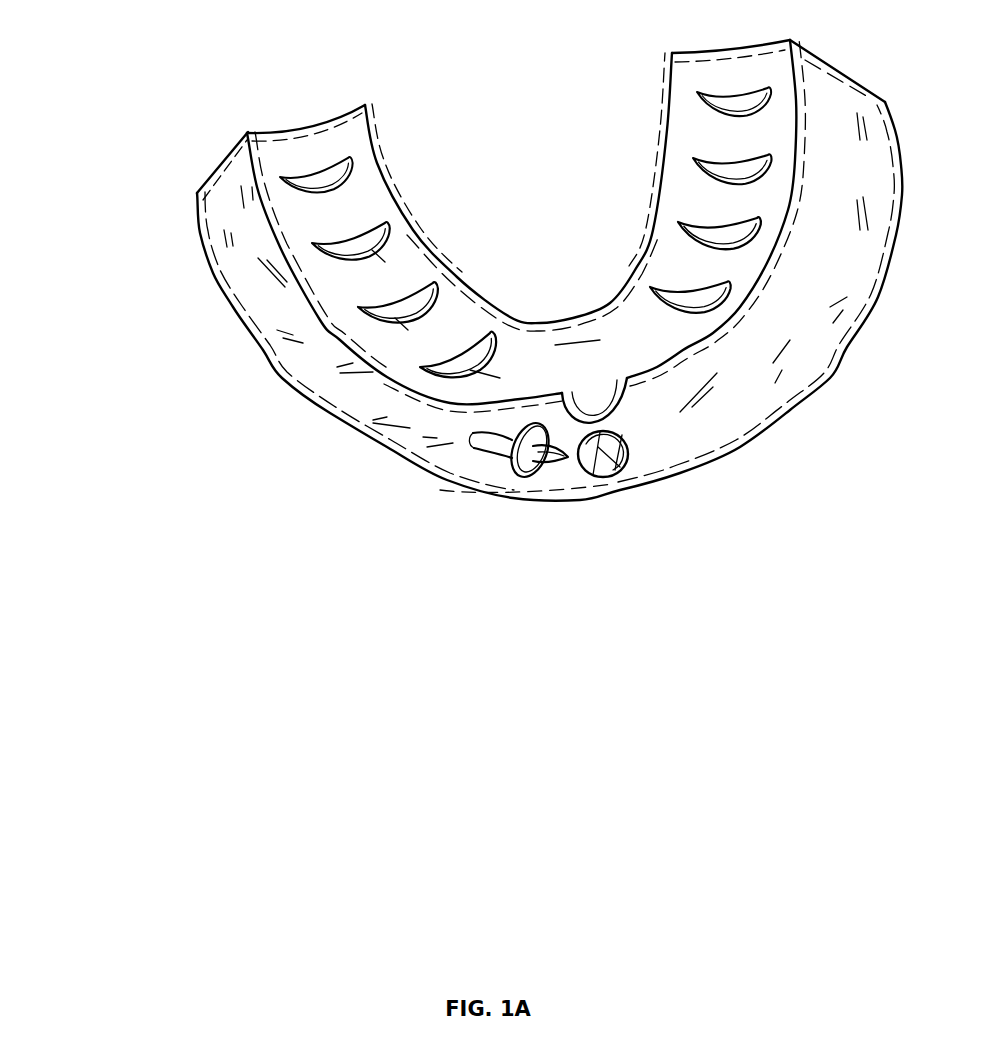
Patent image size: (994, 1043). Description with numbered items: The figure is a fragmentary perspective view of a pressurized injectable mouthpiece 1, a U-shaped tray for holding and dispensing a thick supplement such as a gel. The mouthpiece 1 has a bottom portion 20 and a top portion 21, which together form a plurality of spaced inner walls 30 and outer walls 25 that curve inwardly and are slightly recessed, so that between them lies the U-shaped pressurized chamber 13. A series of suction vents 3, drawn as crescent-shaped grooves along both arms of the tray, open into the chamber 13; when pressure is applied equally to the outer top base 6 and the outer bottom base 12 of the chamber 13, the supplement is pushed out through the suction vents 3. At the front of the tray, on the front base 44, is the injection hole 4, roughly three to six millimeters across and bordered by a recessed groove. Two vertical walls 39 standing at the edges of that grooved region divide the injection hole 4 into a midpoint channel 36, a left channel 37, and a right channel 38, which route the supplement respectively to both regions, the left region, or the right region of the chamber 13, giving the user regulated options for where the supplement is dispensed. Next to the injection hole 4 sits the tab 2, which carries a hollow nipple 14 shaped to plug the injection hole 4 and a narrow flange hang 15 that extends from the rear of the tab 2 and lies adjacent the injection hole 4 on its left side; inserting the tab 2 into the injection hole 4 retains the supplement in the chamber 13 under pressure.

The pressurized injectable mouthpiece 1 is at (522, 183).
The tab 2 is at (512, 473).
The suction vents 3 is at (325, 170).
The injection hole 4 is at (620, 433).
The outer top base 6 is at (527, 340).
The outer bottom base 12 is at (250, 335).
The pressurized chamber 13 is at (388, 283).
The nipple 14 is at (553, 467).
The flange hang 15 is at (500, 448).
The bottom portion 20 is at (195, 243).
The top portion 21 is at (290, 137).
The outer walls 25 is at (253, 230).
The inner walls 30 is at (640, 260).
The midpoint channel 36 is at (598, 457).
The left channel 37 is at (597, 442).
The right channel 38 is at (623, 437).
The vertical walls 39 is at (632, 455).
The front base 44 is at (653, 422).